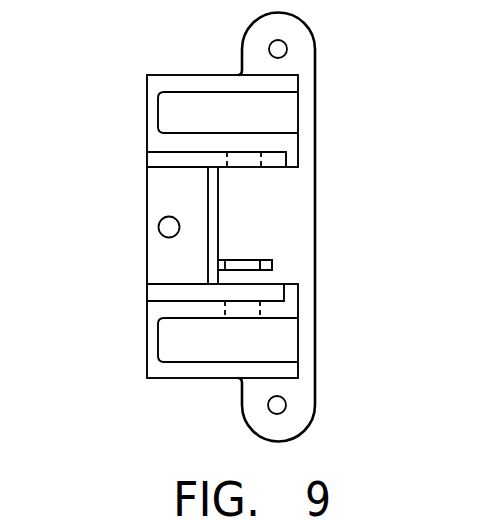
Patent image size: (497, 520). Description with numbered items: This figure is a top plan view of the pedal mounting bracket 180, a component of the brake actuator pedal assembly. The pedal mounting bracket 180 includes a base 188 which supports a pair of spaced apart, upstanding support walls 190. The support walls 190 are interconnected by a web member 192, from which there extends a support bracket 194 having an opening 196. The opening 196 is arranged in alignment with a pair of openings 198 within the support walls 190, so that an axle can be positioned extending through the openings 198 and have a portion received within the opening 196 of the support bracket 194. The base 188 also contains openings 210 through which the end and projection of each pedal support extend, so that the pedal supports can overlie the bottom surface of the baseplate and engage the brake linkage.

The pedal mounting bracket 180 is at (315, 375).
The base 188 is at (313, 43).
The support walls 190 is at (228, 248).
The web member 192 is at (220, 218).
The support bracket 194 is at (272, 270).
The opening 196 is at (243, 262).
The openings 198 is at (242, 160).
The opening 210 is at (292, 113).